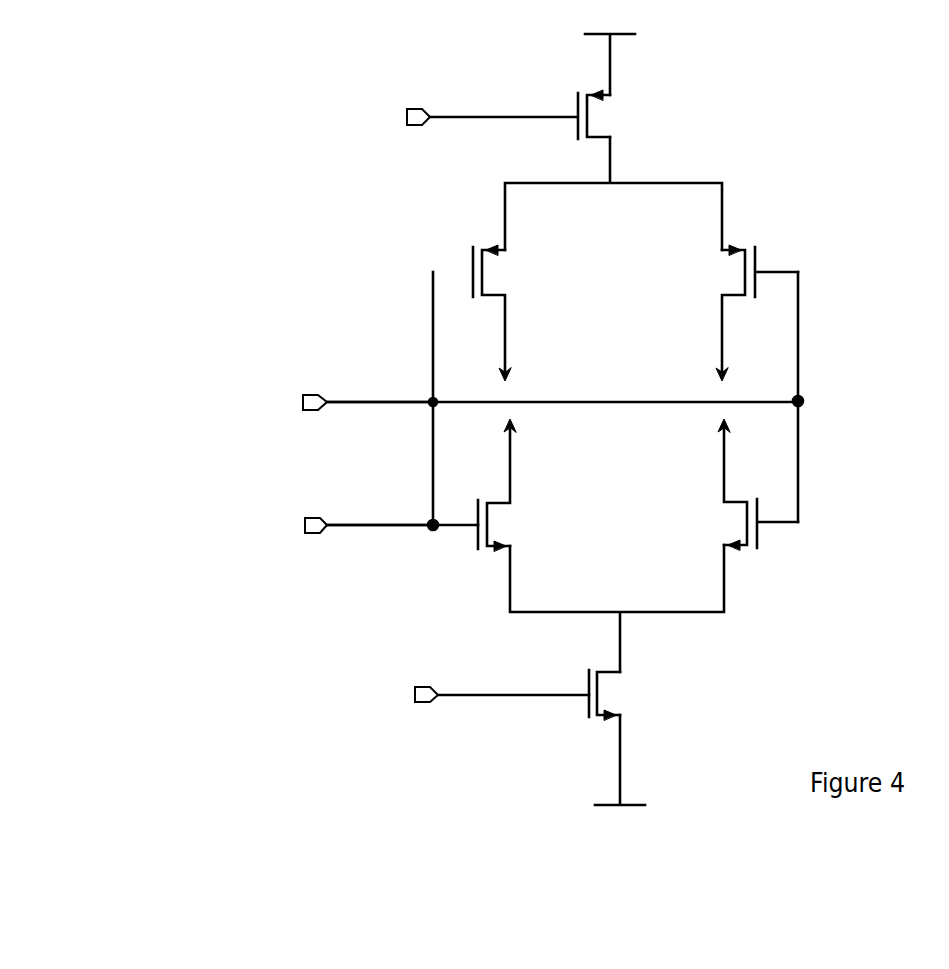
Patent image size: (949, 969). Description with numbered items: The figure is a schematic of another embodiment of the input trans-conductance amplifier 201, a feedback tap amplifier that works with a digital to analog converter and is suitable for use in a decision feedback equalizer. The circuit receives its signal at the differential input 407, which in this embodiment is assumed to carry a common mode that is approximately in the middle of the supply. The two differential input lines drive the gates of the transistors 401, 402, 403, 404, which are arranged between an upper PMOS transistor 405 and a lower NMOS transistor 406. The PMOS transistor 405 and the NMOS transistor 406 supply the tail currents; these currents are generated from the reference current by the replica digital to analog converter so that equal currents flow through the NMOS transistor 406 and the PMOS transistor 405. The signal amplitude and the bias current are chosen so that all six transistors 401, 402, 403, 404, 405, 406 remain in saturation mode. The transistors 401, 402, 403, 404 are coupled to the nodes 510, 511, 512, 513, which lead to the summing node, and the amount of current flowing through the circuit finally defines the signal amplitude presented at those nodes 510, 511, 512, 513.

The input trans-conductance amplifier 201 is at (255, 147).
The transistor 401 is at (500, 508).
The transistor 402 is at (495, 289).
The transistor 403 is at (735, 505).
The transistor 404 is at (731, 288).
The PMOS transistor 405 is at (601, 134).
The NMOS transistor 406 is at (617, 675).
The differential input 407 is at (383, 528).
The node 510 is at (532, 367).
The node 511 is at (535, 430).
The node 512 is at (748, 366).
The node 513 is at (750, 427).